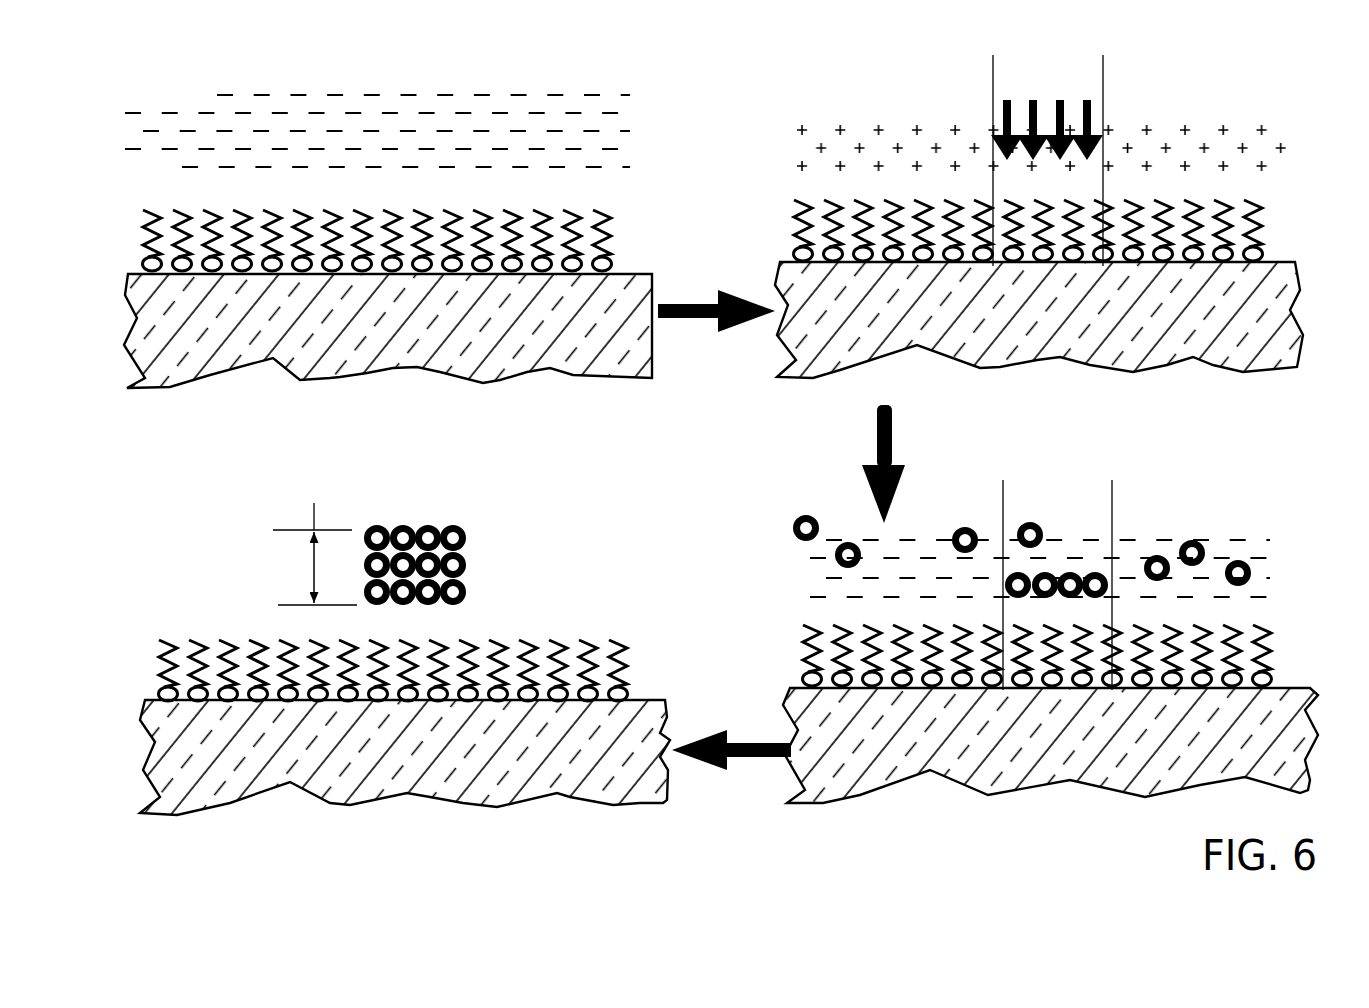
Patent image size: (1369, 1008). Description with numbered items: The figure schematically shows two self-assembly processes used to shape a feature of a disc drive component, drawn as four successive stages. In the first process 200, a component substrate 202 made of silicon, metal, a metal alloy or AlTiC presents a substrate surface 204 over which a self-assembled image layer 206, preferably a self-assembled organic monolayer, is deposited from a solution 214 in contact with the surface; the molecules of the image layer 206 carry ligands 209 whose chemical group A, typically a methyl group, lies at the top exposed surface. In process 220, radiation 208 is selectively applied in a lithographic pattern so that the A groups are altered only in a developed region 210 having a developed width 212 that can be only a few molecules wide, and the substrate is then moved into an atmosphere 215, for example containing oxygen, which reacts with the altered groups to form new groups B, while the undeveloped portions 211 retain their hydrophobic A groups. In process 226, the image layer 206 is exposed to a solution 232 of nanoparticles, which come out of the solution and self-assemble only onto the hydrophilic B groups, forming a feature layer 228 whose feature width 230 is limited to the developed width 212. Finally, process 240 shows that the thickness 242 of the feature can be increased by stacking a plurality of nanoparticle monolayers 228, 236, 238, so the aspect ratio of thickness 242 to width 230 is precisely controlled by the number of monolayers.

The first process 200 is at (228, 113).
The component substrate 202 is at (382, 337).
The substrate surface 204 is at (497, 273).
The self-assembled image layer 206 is at (622, 181).
The radiation 208 is at (1085, 100).
The ligands 209 is at (150, 228).
The developed region 210 is at (1000, 603).
The undeveloped portions 211 is at (808, 600).
The developed width 212 is at (1101, 65).
The solution 214 is at (597, 91).
The atmosphere 215 is at (1258, 128).
The process 220 is at (886, 115).
The process 226 is at (1202, 486).
The feature layer 228 is at (1048, 578).
The feature width 230 is at (1110, 492).
The solution 232 is at (1233, 555).
The monolayer 236 is at (463, 558).
The monolayer 238 is at (455, 530).
The process 240 is at (236, 553).
The thickness 242 is at (315, 539).